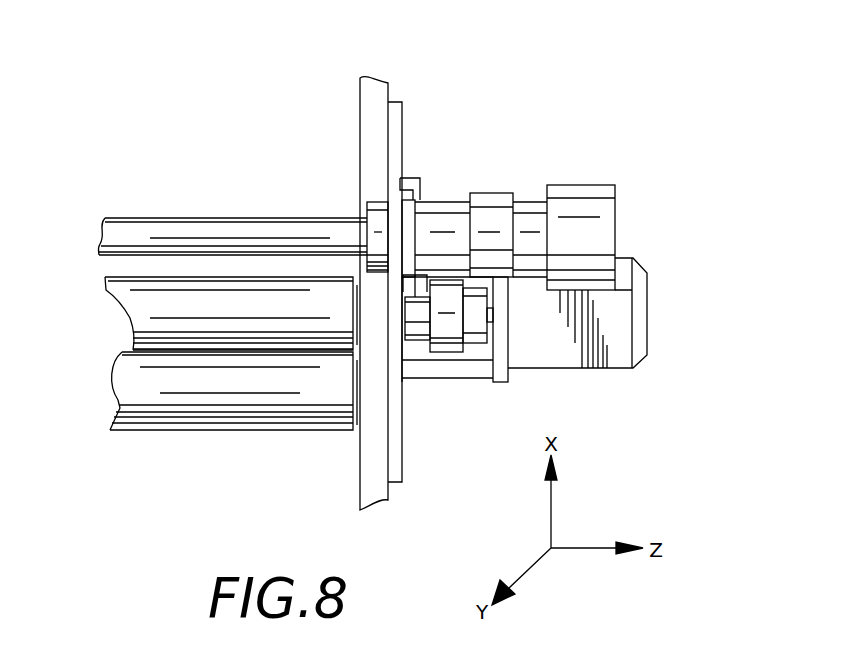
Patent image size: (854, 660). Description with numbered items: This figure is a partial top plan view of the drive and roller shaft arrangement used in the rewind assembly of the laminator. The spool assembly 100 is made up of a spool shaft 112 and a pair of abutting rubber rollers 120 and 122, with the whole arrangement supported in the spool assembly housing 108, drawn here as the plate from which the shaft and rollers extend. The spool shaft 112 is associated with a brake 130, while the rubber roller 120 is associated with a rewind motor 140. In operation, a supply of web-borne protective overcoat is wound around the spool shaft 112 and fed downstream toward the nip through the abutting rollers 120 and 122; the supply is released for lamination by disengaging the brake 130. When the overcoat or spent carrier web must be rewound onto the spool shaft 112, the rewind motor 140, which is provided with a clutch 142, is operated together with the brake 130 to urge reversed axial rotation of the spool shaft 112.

The spool assembly 100 is at (673, 72).
The spool assembly housing 108 is at (383, 92).
The spool shaft 112 is at (187, 228).
The rubber roller 120 is at (132, 308).
The rubber roller 122 is at (128, 390).
The brake 130 is at (597, 215).
The rewind motor 140 is at (633, 368).
The clutch 142 is at (473, 345).